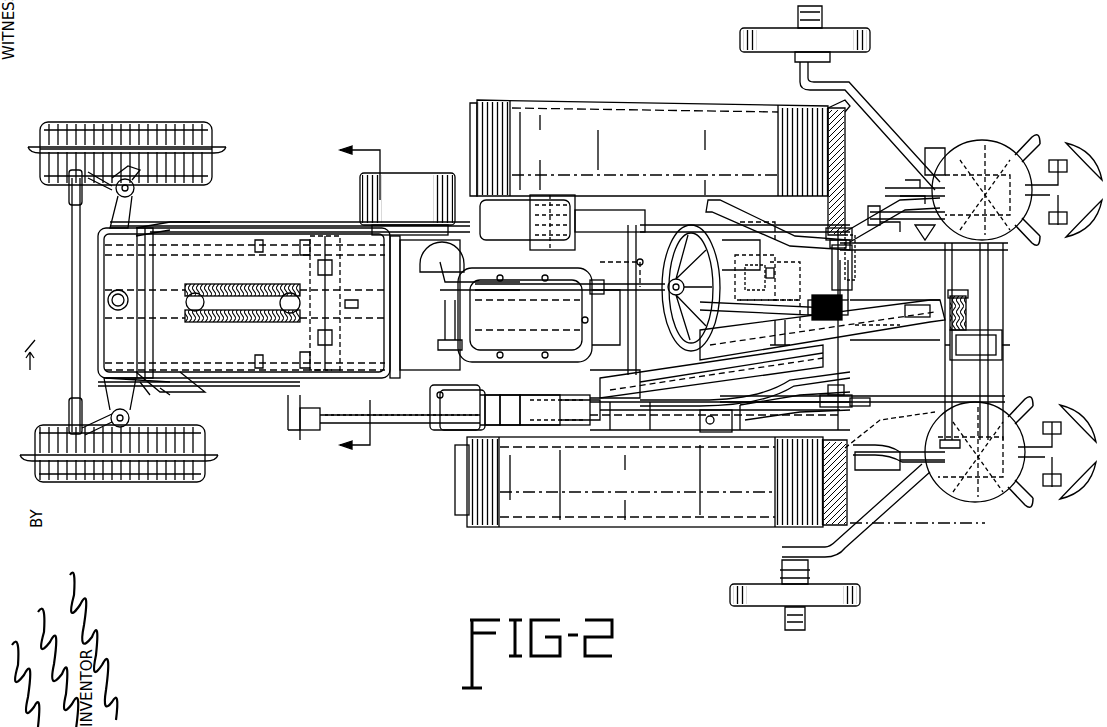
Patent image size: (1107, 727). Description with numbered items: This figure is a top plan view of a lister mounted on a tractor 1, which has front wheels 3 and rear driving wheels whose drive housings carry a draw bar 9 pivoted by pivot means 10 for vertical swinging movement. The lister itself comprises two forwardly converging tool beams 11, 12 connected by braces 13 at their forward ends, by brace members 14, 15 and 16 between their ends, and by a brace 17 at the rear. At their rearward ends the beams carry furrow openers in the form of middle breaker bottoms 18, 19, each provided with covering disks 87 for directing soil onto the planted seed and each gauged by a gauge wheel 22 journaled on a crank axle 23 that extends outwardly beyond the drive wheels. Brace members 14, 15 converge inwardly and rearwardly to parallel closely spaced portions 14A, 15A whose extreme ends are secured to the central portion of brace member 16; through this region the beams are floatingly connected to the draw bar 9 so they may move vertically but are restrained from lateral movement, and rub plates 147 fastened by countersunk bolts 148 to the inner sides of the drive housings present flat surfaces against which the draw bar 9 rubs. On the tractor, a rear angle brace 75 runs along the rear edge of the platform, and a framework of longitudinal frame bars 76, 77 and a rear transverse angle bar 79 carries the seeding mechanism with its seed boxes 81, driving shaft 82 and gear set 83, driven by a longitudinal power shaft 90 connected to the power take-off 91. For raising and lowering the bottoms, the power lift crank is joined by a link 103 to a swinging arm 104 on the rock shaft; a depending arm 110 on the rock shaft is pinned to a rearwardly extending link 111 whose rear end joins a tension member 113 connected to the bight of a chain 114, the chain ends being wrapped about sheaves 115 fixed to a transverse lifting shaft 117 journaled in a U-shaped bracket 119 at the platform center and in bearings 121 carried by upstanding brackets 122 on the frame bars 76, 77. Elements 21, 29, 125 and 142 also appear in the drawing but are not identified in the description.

The tractor 1 is at (434, 166).
The front wheels 3 is at (350, 300).
The draw bar 9 is at (752, 275).
The pivot means 10 is at (455, 476).
The tool beam 11 is at (631, 262).
The tool beam 12 is at (612, 437).
The braces 13 is at (539, 315).
The brace member 14 is at (700, 240).
The parallel closely spaced portion 14A is at (748, 259).
The brace member 15 is at (740, 432).
The parallel closely spaced portion 15A is at (725, 375).
The brace member 16 is at (852, 250).
The brace 17 is at (952, 270).
The middle breaker bottom 18 is at (937, 148).
The middle breaker bottom 19 is at (930, 470).
The bracket 21 is at (845, 248).
The gauge wheel 22 is at (868, 40).
The crank axle 23 is at (876, 112).
The link rod 29 is at (858, 228).
The rear angle brace 75 is at (838, 130).
The frame bar 76 is at (752, 225).
The frame bar 77 is at (790, 528).
The rear connecting transverse angle bar 79 is at (990, 268).
The seed box 81 is at (978, 160).
The driving shaft 82 is at (966, 312).
The gear set 83 is at (1002, 346).
The covering disk 87 is at (1072, 321).
The power shaft 90 is at (600, 398).
The power take-off 91 is at (450, 430).
The link 103 is at (390, 430).
The swinging crank arm 104 is at (320, 430).
The depending arm 110 is at (345, 240).
The rearwardly extending link 111 is at (455, 225).
The tension member 113 is at (570, 200).
The chain 114 is at (775, 323).
The sheave 115 is at (870, 320).
The lifting shaft 117 is at (850, 280).
The U-shaped bracket 119 is at (860, 325).
The bearing 121 is at (828, 298).
The upstanding bracket 122 is at (862, 386).
The seat support 125 is at (848, 222).
The control lever 142 is at (783, 274).
The rub plate 147 is at (700, 425).
The countersunk bolt 148 is at (683, 200).